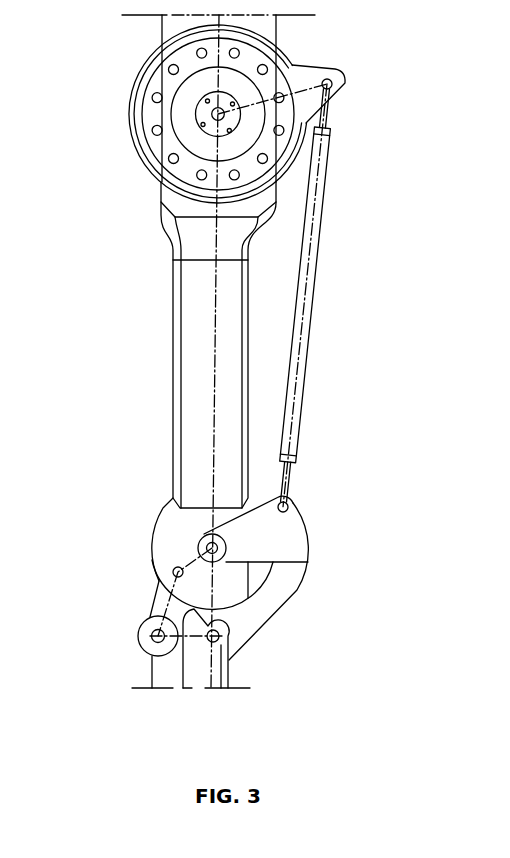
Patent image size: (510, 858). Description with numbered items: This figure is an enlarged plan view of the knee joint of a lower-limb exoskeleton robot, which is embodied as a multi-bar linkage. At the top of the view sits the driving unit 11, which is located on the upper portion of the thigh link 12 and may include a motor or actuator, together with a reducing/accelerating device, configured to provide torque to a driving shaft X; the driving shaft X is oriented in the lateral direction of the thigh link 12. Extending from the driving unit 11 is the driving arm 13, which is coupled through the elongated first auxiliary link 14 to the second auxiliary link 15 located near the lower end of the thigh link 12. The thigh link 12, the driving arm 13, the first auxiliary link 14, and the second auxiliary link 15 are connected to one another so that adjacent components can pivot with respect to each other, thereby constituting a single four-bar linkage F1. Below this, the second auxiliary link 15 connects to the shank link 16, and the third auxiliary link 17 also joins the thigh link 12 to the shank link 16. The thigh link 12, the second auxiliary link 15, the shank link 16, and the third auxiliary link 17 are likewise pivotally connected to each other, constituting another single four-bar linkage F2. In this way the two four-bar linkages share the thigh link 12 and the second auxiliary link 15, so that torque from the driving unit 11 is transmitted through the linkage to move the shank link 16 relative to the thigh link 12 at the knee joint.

The driving unit 11 is at (128, 113).
The thigh link 12 is at (195, 398).
The driving arm 13 is at (318, 72).
The first auxiliary link 14 is at (307, 312).
The second auxiliary link 15 is at (288, 590).
The shank link 16 is at (172, 676).
The third auxiliary link 17 is at (160, 605).
The driving shaft X is at (213, 116).
The four-bar linkage F1 is at (213, 381).
The four-bar linkage F2 is at (176, 613).